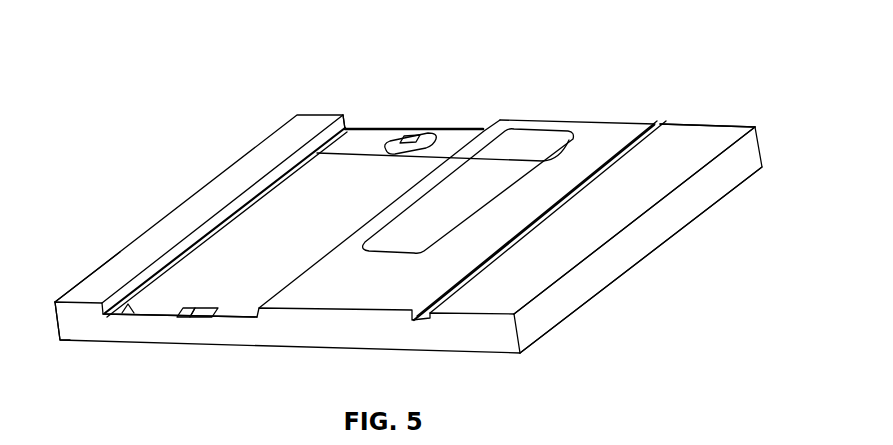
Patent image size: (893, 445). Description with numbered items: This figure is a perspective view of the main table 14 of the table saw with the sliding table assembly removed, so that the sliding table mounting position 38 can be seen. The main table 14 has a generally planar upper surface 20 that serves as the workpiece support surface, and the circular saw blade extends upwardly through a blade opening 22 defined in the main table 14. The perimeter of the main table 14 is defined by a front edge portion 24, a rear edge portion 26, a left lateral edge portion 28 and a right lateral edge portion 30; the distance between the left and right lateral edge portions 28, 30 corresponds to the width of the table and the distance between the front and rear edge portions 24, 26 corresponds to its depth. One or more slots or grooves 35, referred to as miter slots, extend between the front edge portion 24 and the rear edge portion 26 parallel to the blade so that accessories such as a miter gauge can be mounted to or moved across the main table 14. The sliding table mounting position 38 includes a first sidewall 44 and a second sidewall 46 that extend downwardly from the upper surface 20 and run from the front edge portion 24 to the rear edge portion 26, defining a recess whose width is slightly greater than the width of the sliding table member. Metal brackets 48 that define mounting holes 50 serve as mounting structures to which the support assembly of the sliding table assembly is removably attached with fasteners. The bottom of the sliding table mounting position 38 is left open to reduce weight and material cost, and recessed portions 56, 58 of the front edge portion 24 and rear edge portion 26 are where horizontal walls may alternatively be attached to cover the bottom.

The main table 14 is at (666, 86).
The upper surface 20 is at (222, 192).
The blade opening 22 is at (512, 146).
The front edge portion 24 is at (263, 328).
The rear edge portion 26 is at (611, 122).
The left lateral edge portion 28 is at (98, 262).
The right lateral edge portion 30 is at (613, 273).
The slots or grooves 35 is at (666, 121).
The sliding table mounting position 38 is at (407, 123).
The first sidewall 44 is at (343, 120).
The second sidewall 46 is at (298, 278).
The metal brackets 48 is at (437, 135).
The mounting holes 50 is at (388, 143).
The recessed portion of the front edge 56 is at (121, 315).
The recessed portion of the rear edge 58 is at (363, 128).